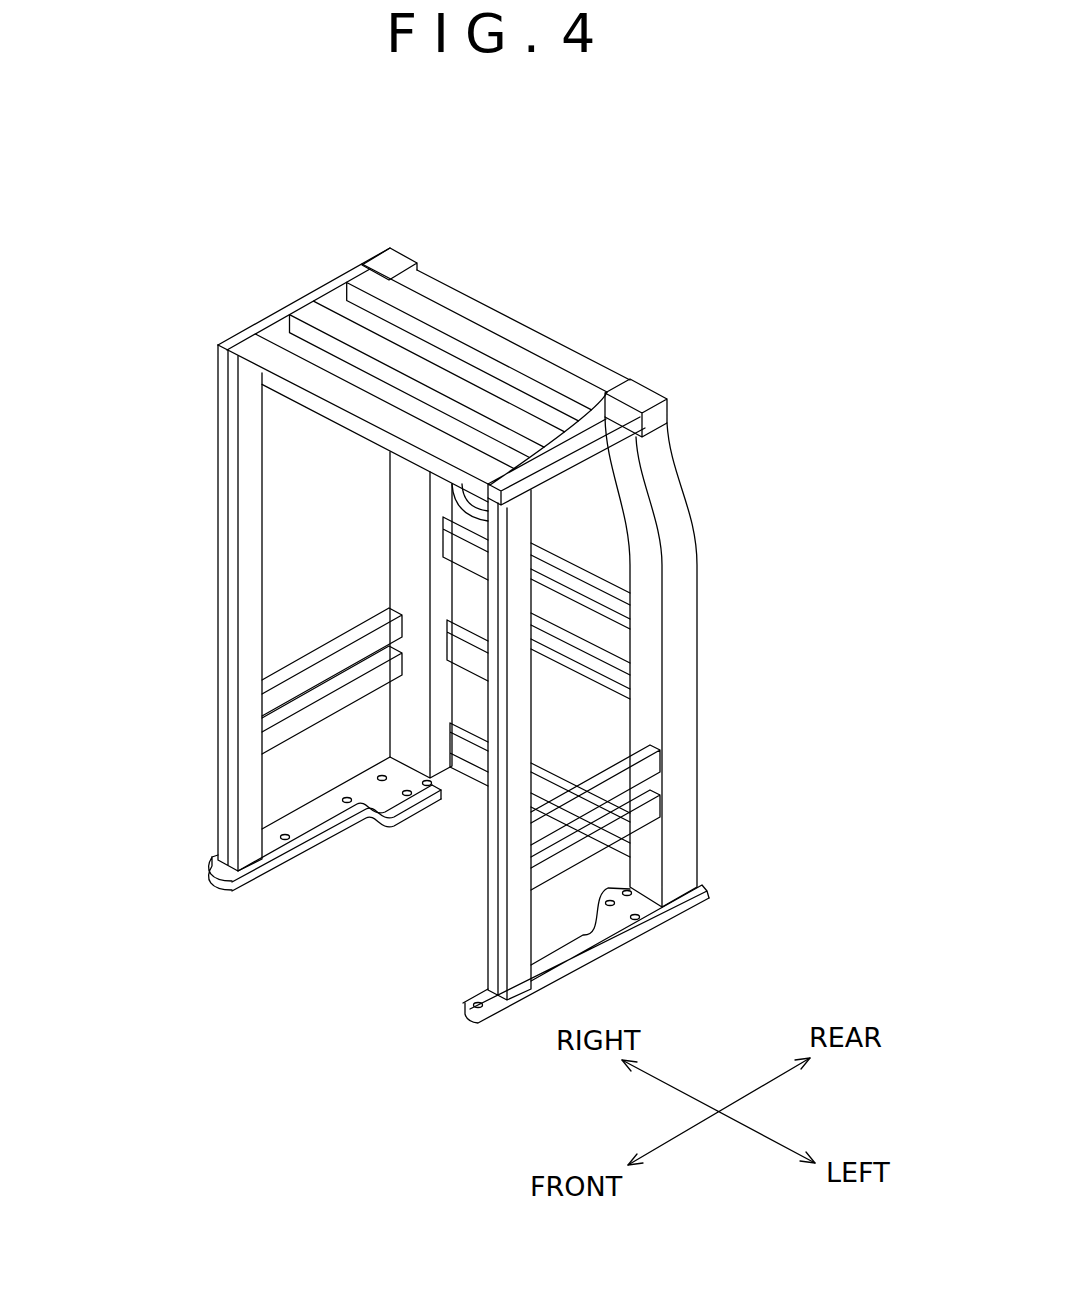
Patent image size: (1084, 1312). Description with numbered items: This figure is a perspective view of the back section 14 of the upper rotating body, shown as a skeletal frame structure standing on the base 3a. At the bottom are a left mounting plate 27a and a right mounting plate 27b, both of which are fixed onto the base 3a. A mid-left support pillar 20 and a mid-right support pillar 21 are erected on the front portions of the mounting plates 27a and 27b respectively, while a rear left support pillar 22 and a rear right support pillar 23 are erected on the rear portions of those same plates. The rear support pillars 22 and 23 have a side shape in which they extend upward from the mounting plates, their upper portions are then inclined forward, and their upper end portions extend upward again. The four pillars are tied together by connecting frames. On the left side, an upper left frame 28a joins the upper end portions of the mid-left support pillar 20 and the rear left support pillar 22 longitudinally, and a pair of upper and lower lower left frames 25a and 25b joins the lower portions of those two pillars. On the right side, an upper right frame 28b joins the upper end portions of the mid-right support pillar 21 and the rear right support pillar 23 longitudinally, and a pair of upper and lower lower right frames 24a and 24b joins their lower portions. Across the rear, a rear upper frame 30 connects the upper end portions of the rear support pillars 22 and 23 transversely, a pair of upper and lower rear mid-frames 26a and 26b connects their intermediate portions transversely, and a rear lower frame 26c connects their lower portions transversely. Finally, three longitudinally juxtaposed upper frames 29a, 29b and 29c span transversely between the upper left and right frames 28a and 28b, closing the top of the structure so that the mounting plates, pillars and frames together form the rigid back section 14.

The back section 14 is at (180, 231).
The base 3a is at (306, 963).
The mid-left support pillar 20 is at (500, 947).
The mid-right support pillar 21 is at (228, 779).
The rear left support pillar 22 is at (685, 843).
The rear right support pillar 23 is at (400, 497).
The lower right frame 24a is at (330, 642).
The lower right frame 24b is at (328, 692).
The lower left frame 25a is at (652, 775).
The lower left frame 25b is at (652, 798).
The rear mid-frame 26a is at (620, 608).
The rear mid-frame 26b is at (607, 697).
The rear lower frame 26c is at (480, 763).
The left mounting plate 27a is at (578, 952).
The right mounting plate 27b is at (313, 813).
The upper left frame 28a is at (638, 432).
The upper right frame 28b is at (247, 330).
The upper frame 29a is at (263, 348).
The upper frame 29b is at (315, 310).
The upper frame 29c is at (378, 285).
The rear upper frame 30 is at (542, 347).